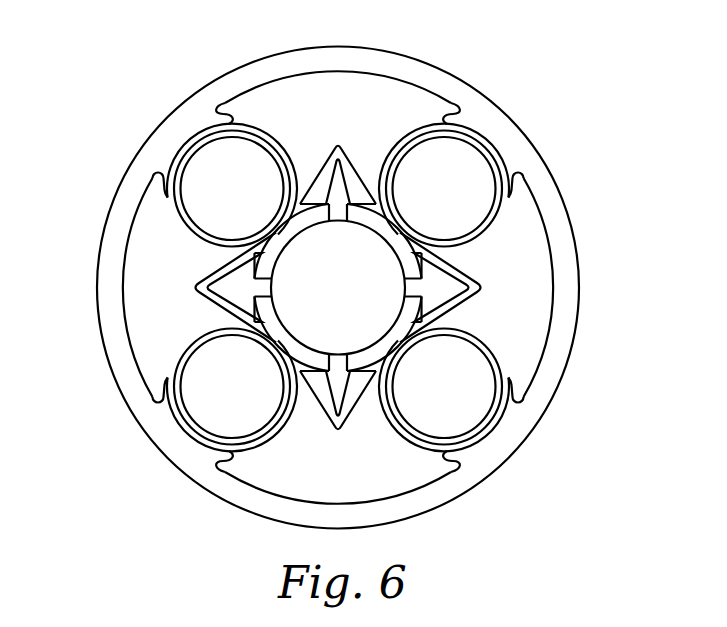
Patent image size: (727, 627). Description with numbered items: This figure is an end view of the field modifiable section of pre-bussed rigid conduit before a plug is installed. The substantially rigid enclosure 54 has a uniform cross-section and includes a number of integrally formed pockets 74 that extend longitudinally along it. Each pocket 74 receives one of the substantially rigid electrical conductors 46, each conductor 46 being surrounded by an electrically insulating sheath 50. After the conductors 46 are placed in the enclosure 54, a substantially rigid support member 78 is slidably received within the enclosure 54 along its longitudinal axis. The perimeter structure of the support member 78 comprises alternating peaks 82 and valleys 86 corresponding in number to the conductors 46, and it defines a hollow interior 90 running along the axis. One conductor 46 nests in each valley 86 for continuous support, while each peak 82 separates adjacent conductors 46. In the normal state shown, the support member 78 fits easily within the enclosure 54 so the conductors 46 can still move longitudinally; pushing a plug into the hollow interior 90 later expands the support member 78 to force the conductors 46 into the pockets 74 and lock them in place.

The electrical conductors 46 is at (218, 202).
The electrically insulating sheath 50 is at (166, 203).
The enclosure 54 is at (578, 258).
The pockets 74 is at (497, 139).
The support member 78 is at (352, 161).
The peaks 82 is at (193, 284).
The valleys 86 is at (415, 322).
The hollow interior 90 is at (324, 300).